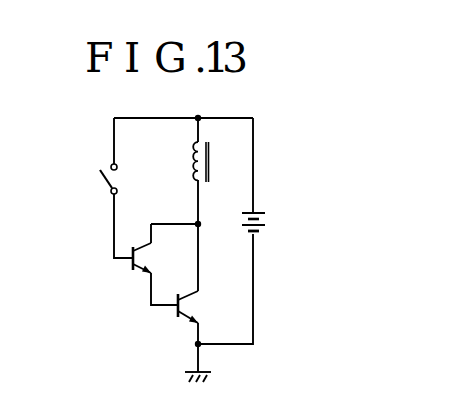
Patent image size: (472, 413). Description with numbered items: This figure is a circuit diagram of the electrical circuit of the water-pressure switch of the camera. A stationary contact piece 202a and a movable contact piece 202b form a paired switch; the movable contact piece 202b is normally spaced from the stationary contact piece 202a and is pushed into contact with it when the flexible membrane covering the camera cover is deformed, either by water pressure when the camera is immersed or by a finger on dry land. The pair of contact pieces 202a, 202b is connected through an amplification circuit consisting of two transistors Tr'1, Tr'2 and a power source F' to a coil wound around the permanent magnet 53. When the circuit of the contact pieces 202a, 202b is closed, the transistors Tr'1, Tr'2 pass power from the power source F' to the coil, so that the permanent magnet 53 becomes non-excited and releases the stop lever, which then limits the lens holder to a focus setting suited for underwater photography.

The stationary contact piece 202a is at (110, 163).
The movable contact piece 202b is at (105, 182).
The permanent magnet 53 is at (192, 172).
The transistor Tr'1 is at (108, 277).
The transistor Tr'2 is at (152, 324).
The power source F' is at (283, 218).